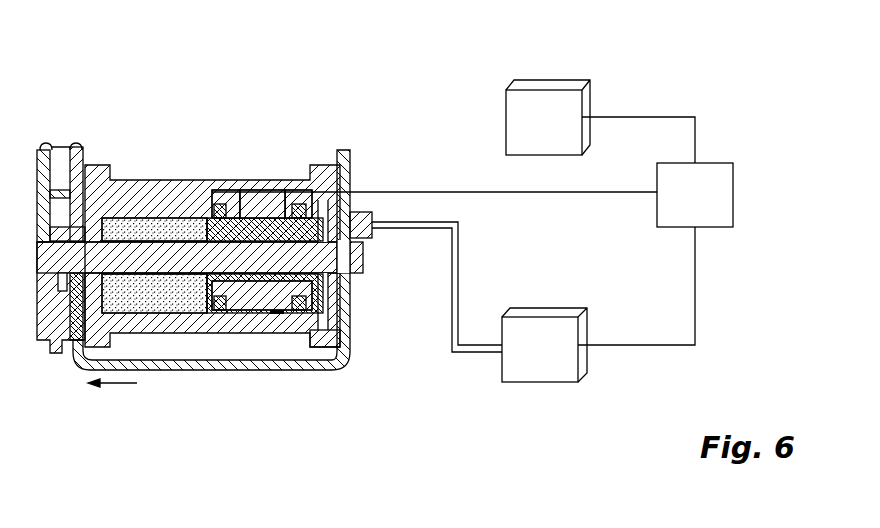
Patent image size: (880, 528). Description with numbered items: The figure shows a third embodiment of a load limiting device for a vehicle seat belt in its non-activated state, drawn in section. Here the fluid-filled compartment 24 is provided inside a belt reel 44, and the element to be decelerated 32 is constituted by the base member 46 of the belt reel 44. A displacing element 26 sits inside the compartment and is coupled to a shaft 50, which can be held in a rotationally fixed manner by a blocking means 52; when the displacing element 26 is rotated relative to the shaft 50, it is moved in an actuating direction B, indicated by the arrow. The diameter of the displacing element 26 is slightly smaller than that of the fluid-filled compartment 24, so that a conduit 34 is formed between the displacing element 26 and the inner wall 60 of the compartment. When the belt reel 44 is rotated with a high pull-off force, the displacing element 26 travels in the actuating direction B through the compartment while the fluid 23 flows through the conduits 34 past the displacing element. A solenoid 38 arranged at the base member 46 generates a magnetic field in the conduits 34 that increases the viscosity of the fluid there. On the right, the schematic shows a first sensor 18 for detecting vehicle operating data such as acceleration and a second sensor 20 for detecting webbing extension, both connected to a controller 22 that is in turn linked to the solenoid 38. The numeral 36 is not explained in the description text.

The first sensor 18 is at (552, 82).
The second sensor 20 is at (549, 312).
The controller 22 is at (733, 194).
The fluid 23 is at (91, 242).
The fluid-filled compartment 24 is at (128, 180).
The displacing element 26 is at (270, 314).
The element to be decelerated 32 is at (183, 187).
The conduit 34 is at (272, 190).
The pole piece 36 is at (230, 190).
The solenoid 38 is at (374, 232).
The belt reel 44 is at (213, 336).
The base member 46 is at (211, 236).
The shaft 50 is at (173, 315).
The blocking means 52 is at (62, 131).
The inner wall 60 is at (275, 314).
The actuating direction B is at (117, 384).